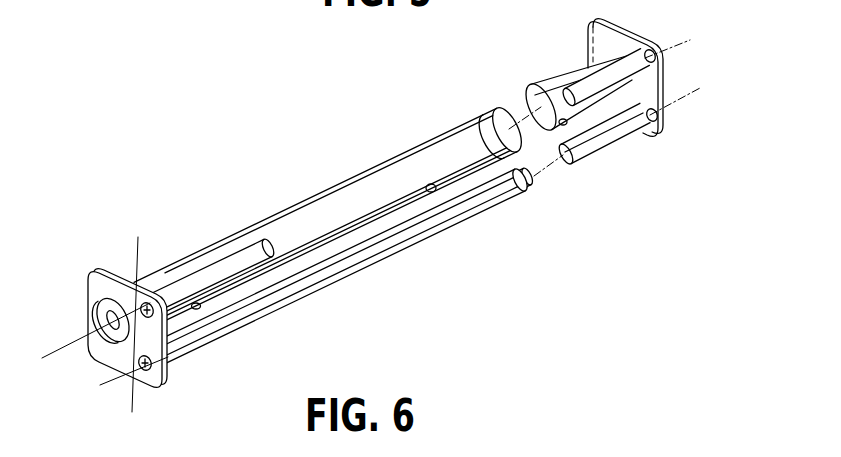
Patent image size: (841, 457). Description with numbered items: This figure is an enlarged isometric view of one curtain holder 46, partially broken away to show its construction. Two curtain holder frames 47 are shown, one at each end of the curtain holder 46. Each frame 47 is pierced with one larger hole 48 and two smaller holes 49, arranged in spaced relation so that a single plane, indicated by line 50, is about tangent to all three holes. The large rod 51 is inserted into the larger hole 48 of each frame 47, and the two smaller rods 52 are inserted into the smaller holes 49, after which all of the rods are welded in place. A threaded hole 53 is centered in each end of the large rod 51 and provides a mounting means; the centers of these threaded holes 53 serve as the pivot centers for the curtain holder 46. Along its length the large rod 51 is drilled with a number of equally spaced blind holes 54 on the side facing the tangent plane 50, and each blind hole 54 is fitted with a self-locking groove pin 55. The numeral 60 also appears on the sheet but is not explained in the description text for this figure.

The curtain holder 46 is at (387, 189).
The curtain holder frame 47 is at (639, 34).
The larger hole 48 is at (110, 368).
The smaller holes 49 is at (164, 381).
The line indicating tangent plane 50 is at (137, 276).
The large rod 51 is at (230, 243).
The smaller rods 52 is at (250, 252).
The threaded hole 53 is at (106, 318).
The blind holes 54 is at (430, 184).
The self-locking groove pin 55 is at (446, 199).
The reference numeral from adjacent figure 60 is at (148, 11).